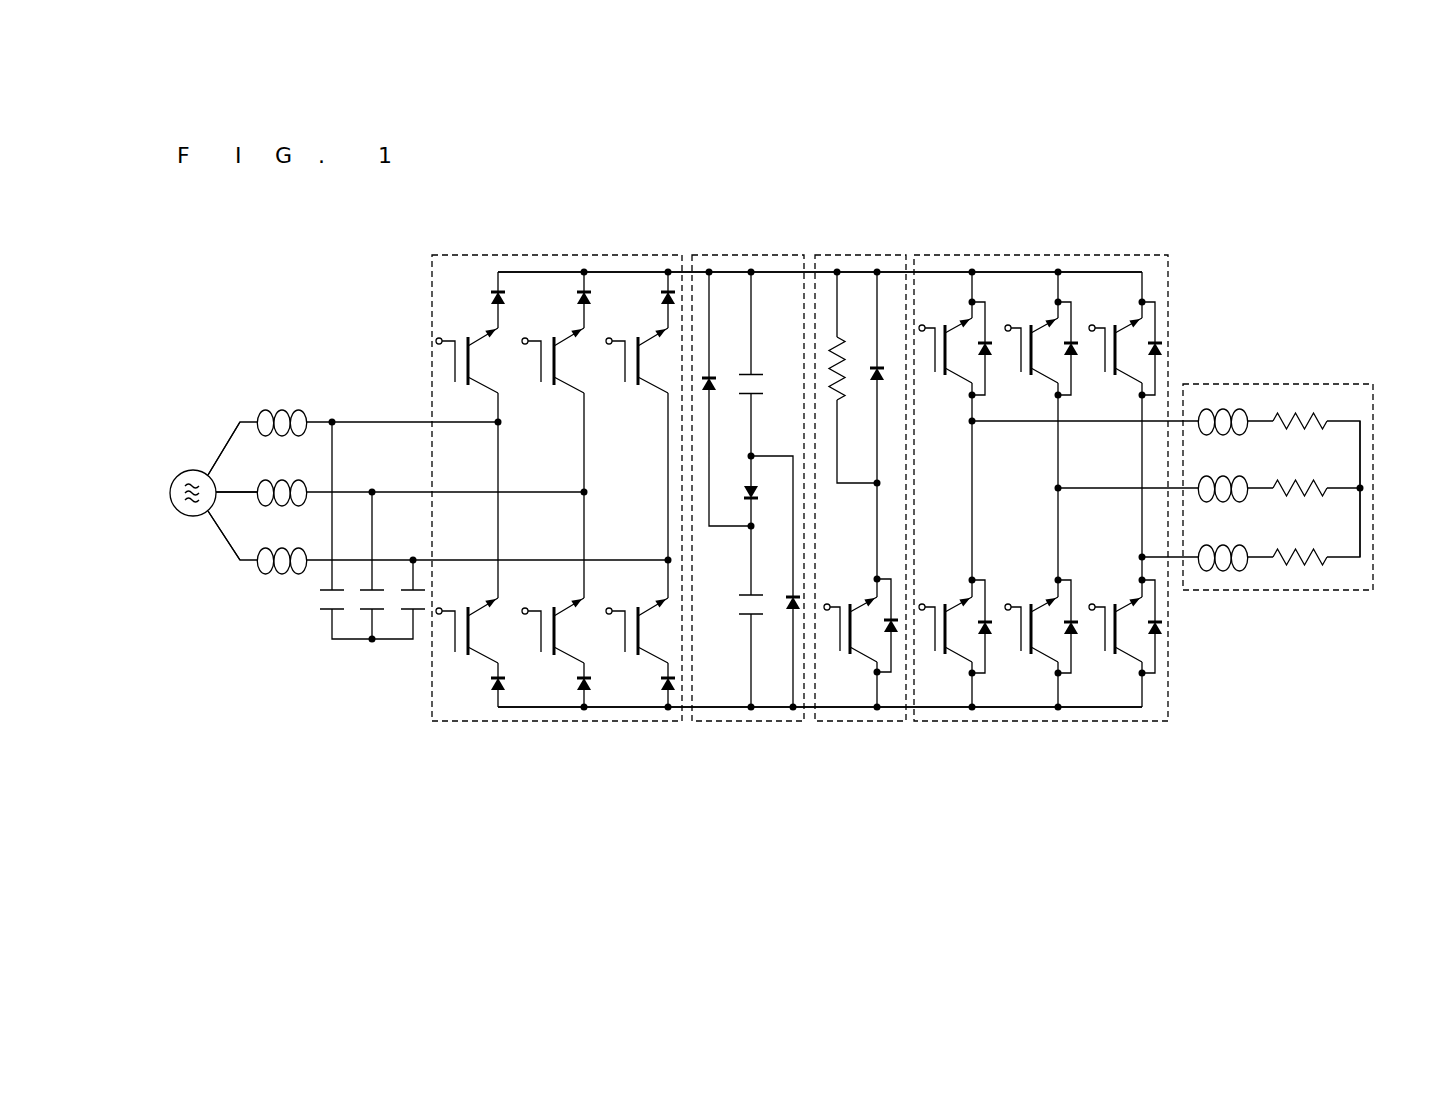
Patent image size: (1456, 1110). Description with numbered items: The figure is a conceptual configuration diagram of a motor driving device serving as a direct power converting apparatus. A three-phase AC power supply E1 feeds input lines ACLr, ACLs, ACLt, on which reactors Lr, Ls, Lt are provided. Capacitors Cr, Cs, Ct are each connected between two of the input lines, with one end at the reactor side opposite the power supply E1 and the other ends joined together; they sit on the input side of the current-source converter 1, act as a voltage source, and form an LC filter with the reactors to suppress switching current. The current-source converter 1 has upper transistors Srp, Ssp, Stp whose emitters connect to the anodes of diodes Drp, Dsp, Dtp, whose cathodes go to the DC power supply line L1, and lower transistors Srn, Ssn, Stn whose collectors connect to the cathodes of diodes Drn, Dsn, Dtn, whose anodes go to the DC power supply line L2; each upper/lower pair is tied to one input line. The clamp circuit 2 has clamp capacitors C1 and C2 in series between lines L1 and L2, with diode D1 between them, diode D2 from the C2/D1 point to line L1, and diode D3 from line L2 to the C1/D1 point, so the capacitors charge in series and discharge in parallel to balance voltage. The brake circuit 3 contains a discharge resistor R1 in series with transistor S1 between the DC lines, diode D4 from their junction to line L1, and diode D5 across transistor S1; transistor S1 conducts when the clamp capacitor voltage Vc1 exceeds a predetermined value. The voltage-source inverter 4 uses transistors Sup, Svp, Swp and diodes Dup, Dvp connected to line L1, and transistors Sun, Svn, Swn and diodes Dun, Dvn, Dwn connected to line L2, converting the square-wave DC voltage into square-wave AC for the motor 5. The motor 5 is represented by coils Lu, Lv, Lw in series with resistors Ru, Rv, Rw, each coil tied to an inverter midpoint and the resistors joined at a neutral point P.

The current-source converter 1 is at (461, 255).
The clamp circuit 2 is at (748, 255).
The brake circuit 3 is at (874, 255).
The voltage-source inverter 4 is at (1062, 254).
The motor 5 is at (1373, 412).
The power supply E1 is at (182, 517).
The input line ACLr is at (250, 410).
The input line ACLs is at (232, 488).
The input line ACLt is at (232, 552).
The reactor Lr is at (268, 407).
The reactor Ls is at (273, 478).
The reactor Lt is at (275, 548).
The capacitor Cr is at (327, 612).
The capacitor Cs is at (367, 612).
The capacitor Ct is at (410, 612).
The transistor Srp is at (466, 352).
The transistor Ssp is at (551, 352).
The transistor Stp is at (634, 352).
The transistor Srn is at (467, 647).
The transistor Ssn is at (553, 647).
The transistor Stn is at (637, 647).
The diode Drp is at (506, 296).
The diode Dsp is at (592, 296).
The diode Dtp is at (660, 296).
The diode Drn is at (495, 692).
The diode Dsn is at (578, 692).
The diode Dtn is at (662, 692).
The DC power supply line L1 is at (690, 268).
The DC power supply line L2 is at (688, 710).
The diode D1 is at (760, 493).
The diode D2 is at (712, 380).
The diode D3 is at (788, 606).
The clamp capacitor C1 is at (765, 383).
The clamp capacitor C2 is at (745, 620).
The voltage Vc1 is at (720, 627).
The discharge resistor R1 is at (848, 352).
The diode D4 is at (867, 378).
The diode D5 is at (895, 621).
The transistor S1 is at (850, 620).
The transistor Sup is at (944, 342).
The transistor Svp is at (1026, 342).
The transistor Swp is at (1112, 342).
The transistor Sun is at (945, 644).
The transistor Svn is at (1029, 644).
The transistor Swn is at (1112, 644).
The diode Dup is at (990, 355).
The diode Dvp is at (1077, 355).
The diode Dwn is at (1163, 338).
The diode Dun is at (988, 620).
The diode Dvn is at (1074, 620).
The coil Lu is at (1222, 406).
The coil Lv is at (1215, 472).
The coil Lw is at (1227, 575).
The resistor Ru is at (1303, 412).
The resistor Rv is at (1286, 478).
The resistor Rw is at (1307, 568).
The neutral point P is at (1363, 490).